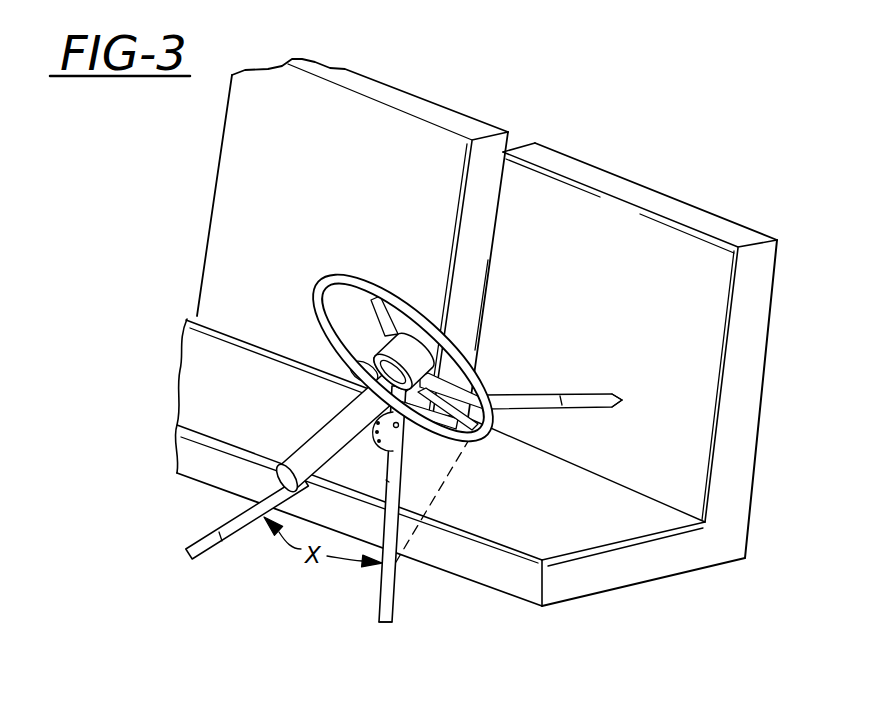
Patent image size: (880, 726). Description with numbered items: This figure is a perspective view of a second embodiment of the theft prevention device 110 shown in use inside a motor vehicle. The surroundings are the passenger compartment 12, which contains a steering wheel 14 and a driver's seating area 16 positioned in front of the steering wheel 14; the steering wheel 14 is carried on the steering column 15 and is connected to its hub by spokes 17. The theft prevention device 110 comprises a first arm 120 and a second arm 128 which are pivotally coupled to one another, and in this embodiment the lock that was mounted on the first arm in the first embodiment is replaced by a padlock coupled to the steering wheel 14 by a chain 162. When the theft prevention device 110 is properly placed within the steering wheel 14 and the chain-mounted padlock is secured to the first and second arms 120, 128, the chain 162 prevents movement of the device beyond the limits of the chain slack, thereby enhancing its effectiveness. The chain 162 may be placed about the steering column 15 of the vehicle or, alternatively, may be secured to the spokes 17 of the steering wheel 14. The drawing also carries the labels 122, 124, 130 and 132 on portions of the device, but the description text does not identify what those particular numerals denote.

The passenger compartment 12 is at (478, 342).
The steering wheel 14 is at (320, 277).
The steering column 15 is at (300, 448).
The driver's seating area 16 is at (704, 448).
The spokes 17 is at (367, 303).
The theft prevention device 110 is at (571, 428).
The first arm 120 is at (594, 408).
The arm tip 122 is at (616, 395).
The lower rod 124 is at (226, 542).
The second arm 128 is at (380, 593).
The seat back edge 130 is at (470, 341).
The rod lower end 132 is at (393, 626).
The chain 162 is at (350, 381).